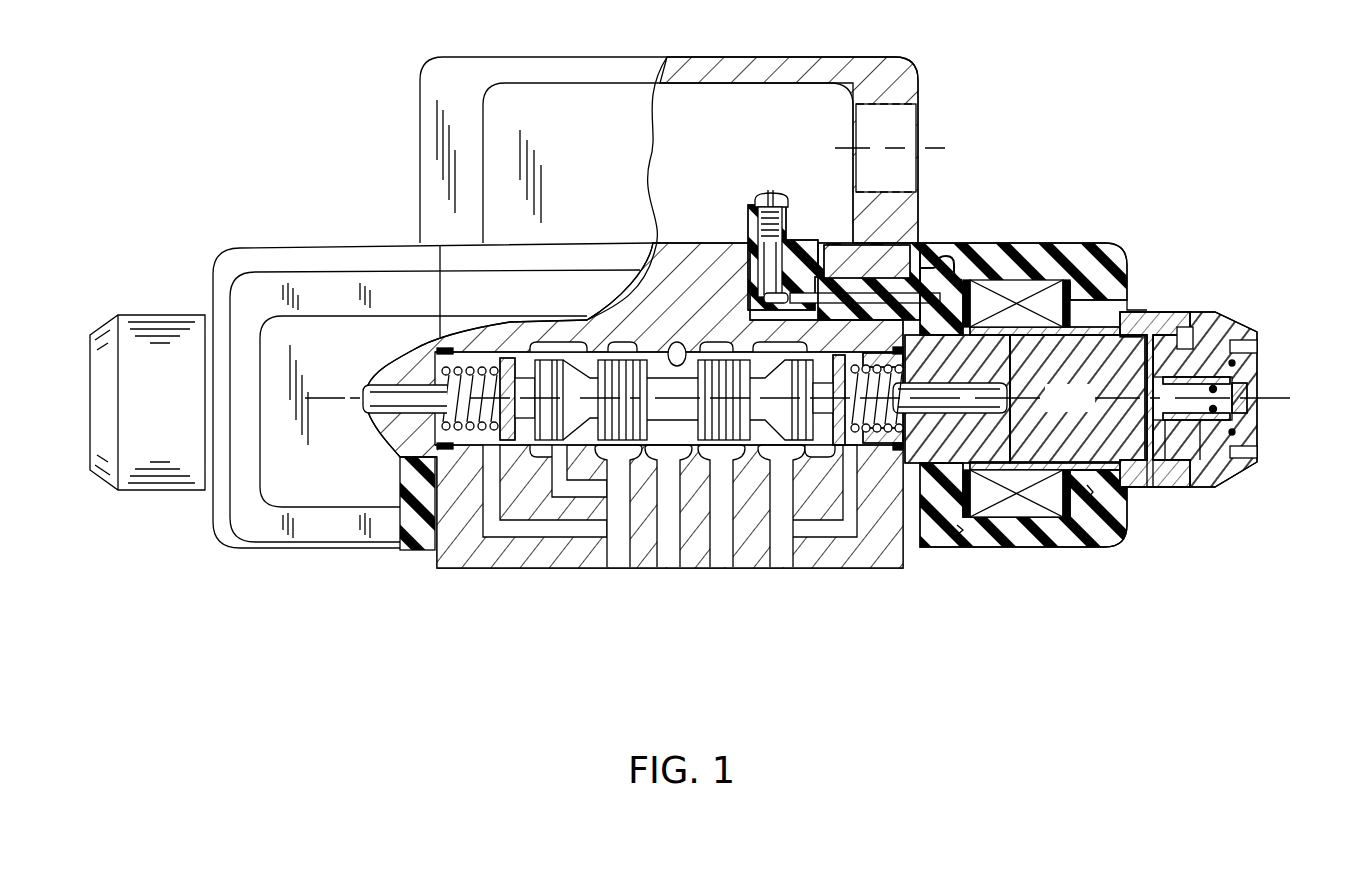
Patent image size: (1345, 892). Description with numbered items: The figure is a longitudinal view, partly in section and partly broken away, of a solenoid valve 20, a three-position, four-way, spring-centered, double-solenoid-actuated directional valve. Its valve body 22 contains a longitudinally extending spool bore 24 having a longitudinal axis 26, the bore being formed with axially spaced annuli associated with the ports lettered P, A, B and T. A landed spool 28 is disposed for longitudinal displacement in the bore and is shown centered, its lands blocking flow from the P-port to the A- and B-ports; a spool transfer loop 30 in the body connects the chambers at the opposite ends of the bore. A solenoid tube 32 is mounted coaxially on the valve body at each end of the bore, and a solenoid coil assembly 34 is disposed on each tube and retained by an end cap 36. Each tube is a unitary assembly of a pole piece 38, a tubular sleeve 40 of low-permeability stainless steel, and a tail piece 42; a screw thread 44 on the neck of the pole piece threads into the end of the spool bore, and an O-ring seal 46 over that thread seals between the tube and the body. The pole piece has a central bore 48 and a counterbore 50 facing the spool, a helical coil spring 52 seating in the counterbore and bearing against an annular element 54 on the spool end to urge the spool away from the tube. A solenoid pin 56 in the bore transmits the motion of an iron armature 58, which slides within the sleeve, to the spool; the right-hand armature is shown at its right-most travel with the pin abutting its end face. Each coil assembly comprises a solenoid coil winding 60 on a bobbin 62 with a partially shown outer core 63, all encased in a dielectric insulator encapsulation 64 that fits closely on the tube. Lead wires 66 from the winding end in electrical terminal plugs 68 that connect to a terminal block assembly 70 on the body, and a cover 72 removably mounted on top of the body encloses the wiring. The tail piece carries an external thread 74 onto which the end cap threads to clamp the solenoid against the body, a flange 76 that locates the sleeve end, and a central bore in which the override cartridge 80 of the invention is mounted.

The solenoid valve 20 is at (452, 570).
The valve body 22 is at (887, 550).
The spool bore 24 is at (673, 397).
The longitudinal axis 26 is at (665, 342).
The landed spool 28 is at (575, 435).
The spool transfer loop 30 is at (823, 545).
The solenoid tube 32 is at (1183, 483).
The solenoid coil assembly 34 is at (222, 545).
The end cap 36 is at (1227, 310).
The pole piece 38 is at (980, 330).
The tubular sleeve 40 is at (1143, 480).
The tail piece 42 is at (1167, 330).
The screw thread 44 is at (913, 243).
The O-ring seal 46 is at (897, 455).
The central bore 48 is at (982, 500).
The counterbore 50 is at (912, 480).
The helical coil spring 52 is at (430, 432).
The annular element 54 is at (857, 287).
The solenoid pin 56 is at (408, 382).
The armature 58 is at (1077, 399).
The solenoid coil winding 60 is at (1053, 243).
The bobbin 62 is at (1113, 263).
The outer core 63 is at (963, 540).
The dielectric insulator encapsulation 64 is at (1087, 540).
The lead wires 66 is at (957, 277).
The electrical terminal plugs 68 is at (772, 297).
The terminal block assembly 70 is at (757, 260).
The cover 72 is at (910, 57).
The thread 74 is at (1220, 340).
The flange 76 is at (1190, 457).
The override cartridge 80 is at (1257, 447).